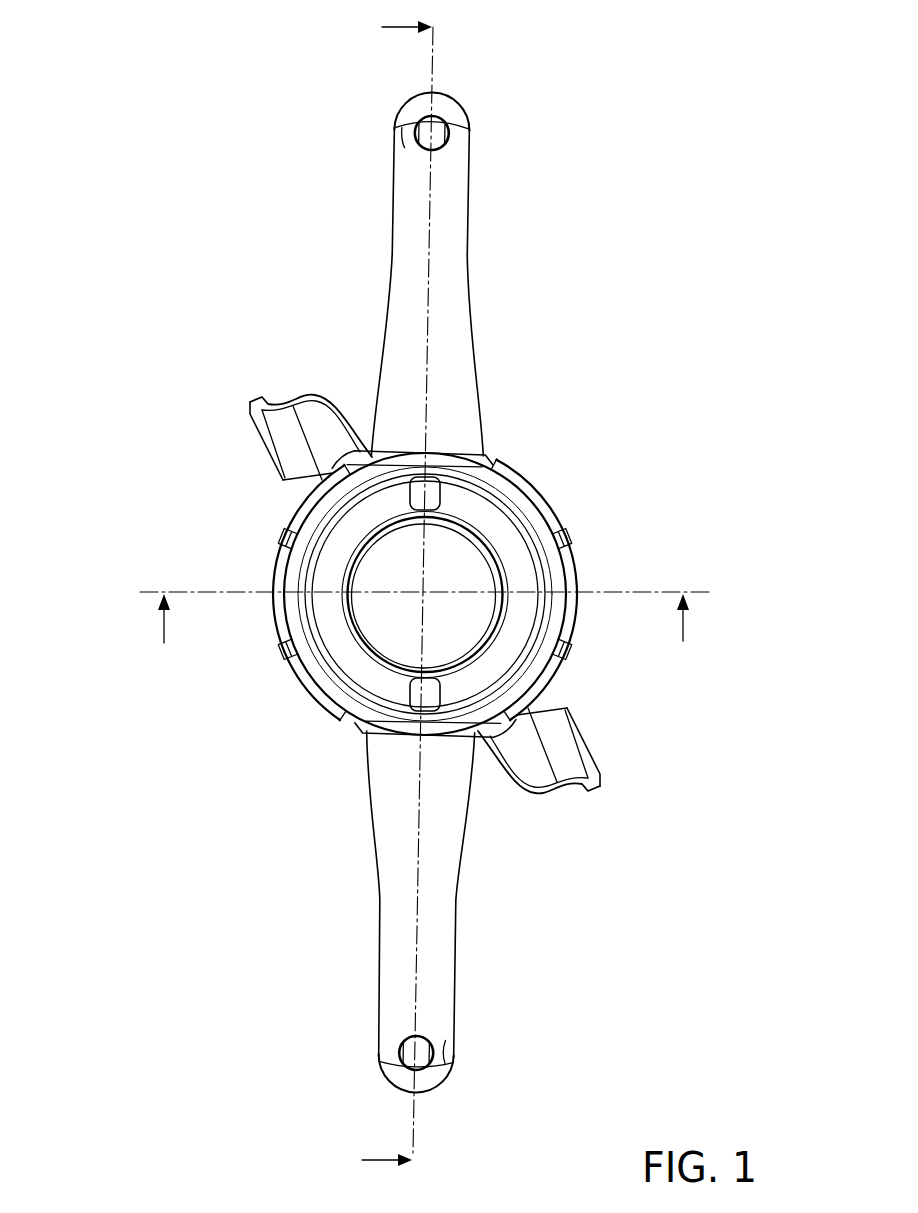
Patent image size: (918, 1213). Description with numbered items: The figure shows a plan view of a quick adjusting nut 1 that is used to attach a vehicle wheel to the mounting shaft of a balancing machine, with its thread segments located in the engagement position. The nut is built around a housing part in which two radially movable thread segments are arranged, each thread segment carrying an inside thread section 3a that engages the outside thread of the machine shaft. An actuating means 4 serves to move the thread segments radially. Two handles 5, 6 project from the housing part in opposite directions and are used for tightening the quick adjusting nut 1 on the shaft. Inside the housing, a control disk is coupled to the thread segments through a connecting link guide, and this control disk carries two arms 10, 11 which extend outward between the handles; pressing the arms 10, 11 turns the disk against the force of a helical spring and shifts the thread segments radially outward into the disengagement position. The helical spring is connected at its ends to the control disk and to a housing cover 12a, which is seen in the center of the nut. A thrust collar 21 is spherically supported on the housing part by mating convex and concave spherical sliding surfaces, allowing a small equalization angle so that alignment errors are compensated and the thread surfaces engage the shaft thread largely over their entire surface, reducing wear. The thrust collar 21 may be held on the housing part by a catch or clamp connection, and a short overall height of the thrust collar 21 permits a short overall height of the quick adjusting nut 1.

The quick adjusting nut 1 is at (212, 185).
The inside thread section 3a is at (437, 523).
The actuating means 4 is at (601, 845).
The handle 5 is at (460, 228).
The handle 6 is at (388, 957).
The arm 10 is at (250, 427).
The arm 11 is at (590, 755).
The housing cover 12a is at (502, 523).
The thrust collar 21 is at (277, 612).